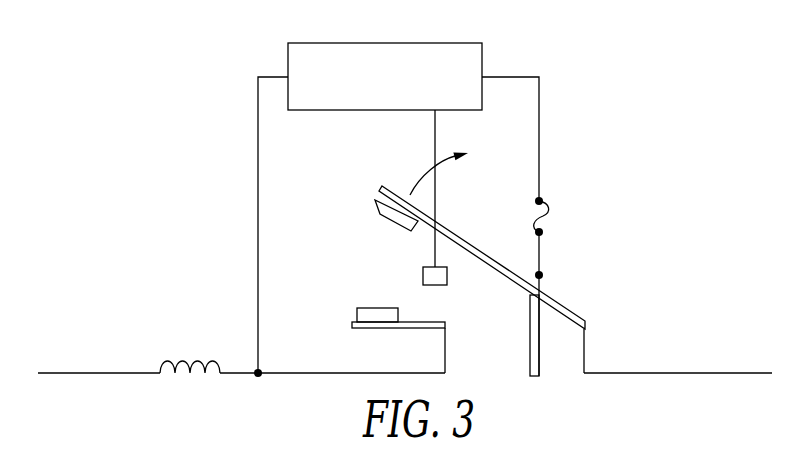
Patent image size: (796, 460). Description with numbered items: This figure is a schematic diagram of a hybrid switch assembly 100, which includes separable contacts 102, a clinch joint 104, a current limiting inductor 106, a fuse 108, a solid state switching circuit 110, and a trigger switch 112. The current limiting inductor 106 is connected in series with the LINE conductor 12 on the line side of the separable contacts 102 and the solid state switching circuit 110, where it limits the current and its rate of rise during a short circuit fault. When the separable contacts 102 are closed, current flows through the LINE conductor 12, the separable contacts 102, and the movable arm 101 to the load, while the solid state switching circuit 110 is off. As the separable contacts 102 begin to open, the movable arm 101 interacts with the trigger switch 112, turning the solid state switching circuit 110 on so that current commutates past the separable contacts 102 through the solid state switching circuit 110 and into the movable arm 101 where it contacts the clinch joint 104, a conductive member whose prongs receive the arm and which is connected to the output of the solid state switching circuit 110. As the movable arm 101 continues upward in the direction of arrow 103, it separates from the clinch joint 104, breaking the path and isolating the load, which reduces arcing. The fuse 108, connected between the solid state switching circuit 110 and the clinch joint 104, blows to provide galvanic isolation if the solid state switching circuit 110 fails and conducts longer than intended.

The hybrid switch assembly 100 is at (220, 91).
The solid state switching circuit 110 is at (484, 52).
The trigger switch 112 is at (447, 279).
The movable arm 101 is at (463, 239).
The arrow 103 is at (428, 175).
The separable contacts 102 is at (378, 230).
The fuse 108 is at (545, 220).
The clinch joint 104 is at (537, 377).
The current limiting inductor 106 is at (201, 360).
The LINE conductor 12 is at (130, 373).